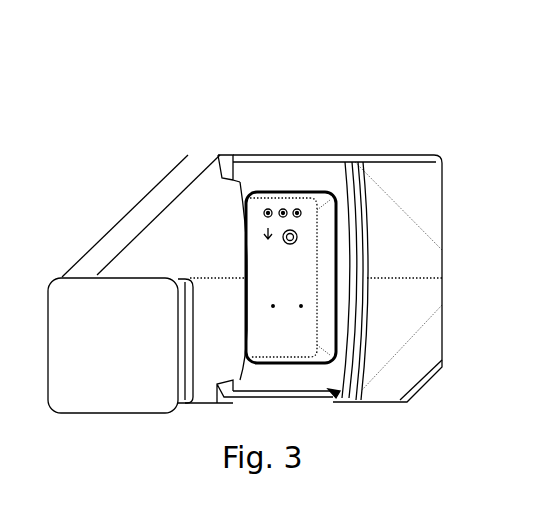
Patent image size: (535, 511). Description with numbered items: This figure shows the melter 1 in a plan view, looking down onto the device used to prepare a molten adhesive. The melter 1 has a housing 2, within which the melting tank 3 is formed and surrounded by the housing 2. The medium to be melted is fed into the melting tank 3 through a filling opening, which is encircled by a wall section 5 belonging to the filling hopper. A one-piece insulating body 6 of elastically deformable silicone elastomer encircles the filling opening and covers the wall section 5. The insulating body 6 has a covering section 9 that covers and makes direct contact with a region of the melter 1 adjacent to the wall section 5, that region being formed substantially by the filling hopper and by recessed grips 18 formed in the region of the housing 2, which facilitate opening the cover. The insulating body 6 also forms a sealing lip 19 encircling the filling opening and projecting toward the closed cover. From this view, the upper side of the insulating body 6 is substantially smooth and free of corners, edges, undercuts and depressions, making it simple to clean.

The melter 1 is at (128, 147).
The housing 2 is at (197, 232).
The melting tank 3 is at (297, 297).
The wall section 5 is at (321, 242).
The insulating body 6 is at (332, 391).
The covering section 9 is at (297, 176).
The recessed grips 18 is at (272, 155).
The sealing lip 19 is at (283, 191).